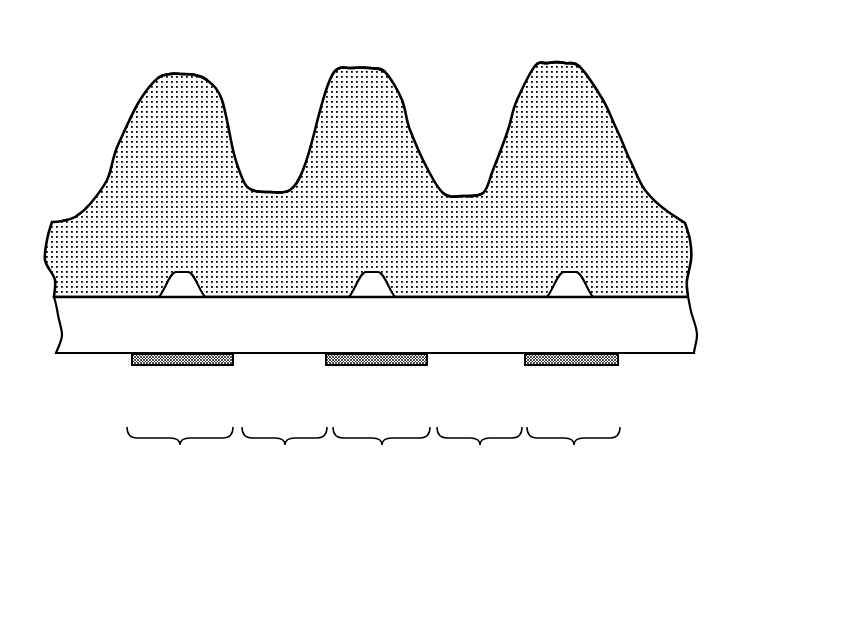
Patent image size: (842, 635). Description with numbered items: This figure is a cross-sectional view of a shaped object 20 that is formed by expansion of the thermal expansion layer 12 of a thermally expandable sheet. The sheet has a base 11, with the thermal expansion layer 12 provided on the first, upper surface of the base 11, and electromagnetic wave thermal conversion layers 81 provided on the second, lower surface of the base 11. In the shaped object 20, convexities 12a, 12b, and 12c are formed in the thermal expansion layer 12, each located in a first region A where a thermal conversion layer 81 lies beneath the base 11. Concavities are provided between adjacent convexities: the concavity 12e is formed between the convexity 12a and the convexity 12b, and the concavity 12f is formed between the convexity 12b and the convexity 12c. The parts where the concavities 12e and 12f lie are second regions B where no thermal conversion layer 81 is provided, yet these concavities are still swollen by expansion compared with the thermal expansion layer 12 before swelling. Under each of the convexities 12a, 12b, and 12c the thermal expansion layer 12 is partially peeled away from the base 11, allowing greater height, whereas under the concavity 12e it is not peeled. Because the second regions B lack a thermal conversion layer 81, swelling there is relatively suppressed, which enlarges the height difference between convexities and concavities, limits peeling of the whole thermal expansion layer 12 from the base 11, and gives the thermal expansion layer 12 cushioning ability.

The shaped object 20 is at (646, 91).
The base 11 is at (677, 322).
The thermal expansion layer 12 is at (409, 153).
The convexity 12a is at (183, 77).
The convexity 12b is at (365, 70).
The convexity 12c is at (555, 64).
The concavity 12e is at (275, 190).
The concavity 12f is at (468, 195).
The electromagnetic wave thermal conversion layer 81 is at (190, 362).